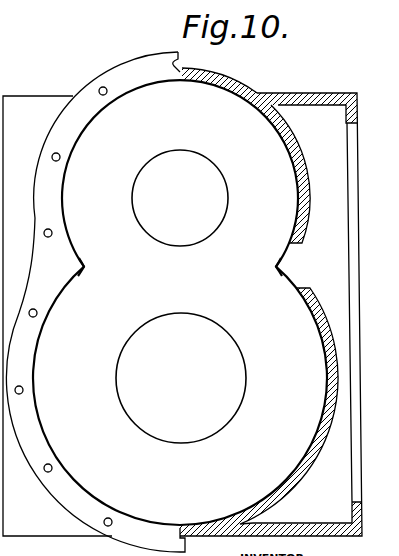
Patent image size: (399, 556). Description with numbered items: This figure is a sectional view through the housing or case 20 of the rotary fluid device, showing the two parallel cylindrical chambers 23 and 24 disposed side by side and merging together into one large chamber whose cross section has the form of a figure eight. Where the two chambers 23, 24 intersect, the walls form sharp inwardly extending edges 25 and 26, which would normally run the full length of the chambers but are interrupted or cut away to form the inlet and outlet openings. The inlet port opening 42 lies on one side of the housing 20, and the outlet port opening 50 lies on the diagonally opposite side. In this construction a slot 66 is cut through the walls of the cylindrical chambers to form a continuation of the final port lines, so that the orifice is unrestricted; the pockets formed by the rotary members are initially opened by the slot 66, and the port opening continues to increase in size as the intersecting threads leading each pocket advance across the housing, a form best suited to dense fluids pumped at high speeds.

The housing or case 20 is at (45, 527).
The cylindrical chamber 23 is at (186, 167).
The cylindrical chamber 24 is at (180, 396).
The inwardly extending edge 25 is at (85, 267).
The inwardly extending edge 26 is at (276, 266).
The inlet port opening 42 is at (17, 110).
The outlet port opening 50 is at (338, 175).
The slot 66 is at (302, 288).